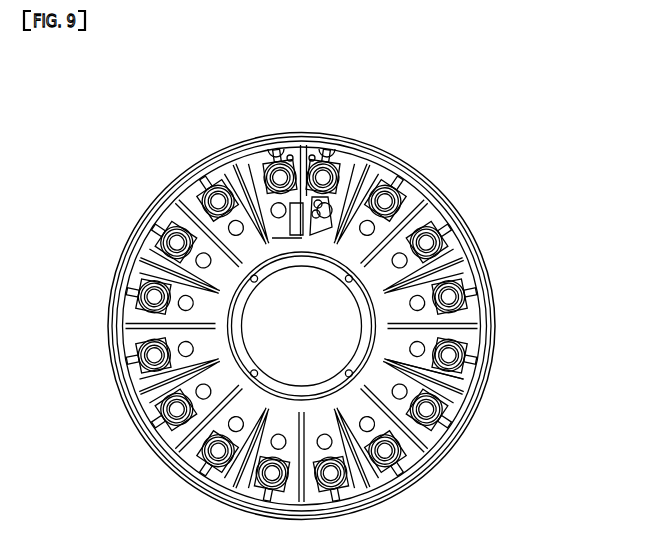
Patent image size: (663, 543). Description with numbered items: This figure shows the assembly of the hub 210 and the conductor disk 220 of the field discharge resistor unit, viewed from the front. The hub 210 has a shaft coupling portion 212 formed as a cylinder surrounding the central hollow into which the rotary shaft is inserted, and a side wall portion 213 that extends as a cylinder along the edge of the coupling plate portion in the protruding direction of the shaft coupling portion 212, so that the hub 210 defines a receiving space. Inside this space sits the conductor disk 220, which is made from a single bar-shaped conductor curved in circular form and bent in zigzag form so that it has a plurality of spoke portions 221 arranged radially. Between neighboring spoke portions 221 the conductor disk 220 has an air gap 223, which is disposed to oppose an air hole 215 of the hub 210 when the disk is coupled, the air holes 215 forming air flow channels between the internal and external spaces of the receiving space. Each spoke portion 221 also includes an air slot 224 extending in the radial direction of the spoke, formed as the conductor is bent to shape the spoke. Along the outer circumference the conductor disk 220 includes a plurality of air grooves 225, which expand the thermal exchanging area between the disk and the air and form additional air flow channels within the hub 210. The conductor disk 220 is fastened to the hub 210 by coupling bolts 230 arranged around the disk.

The hub 210 is at (398, 146).
The shaft coupling portion 212 is at (464, 434).
The side wall portion 213 is at (436, 188).
The air hole 215 is at (384, 270).
The conductor disk 220 is at (472, 331).
The spoke portion 221 is at (442, 421).
The air gap 223 is at (427, 301).
The air slot 224 is at (407, 362).
The air groove 225 is at (468, 358).
The coupling bolt 230 is at (440, 233).